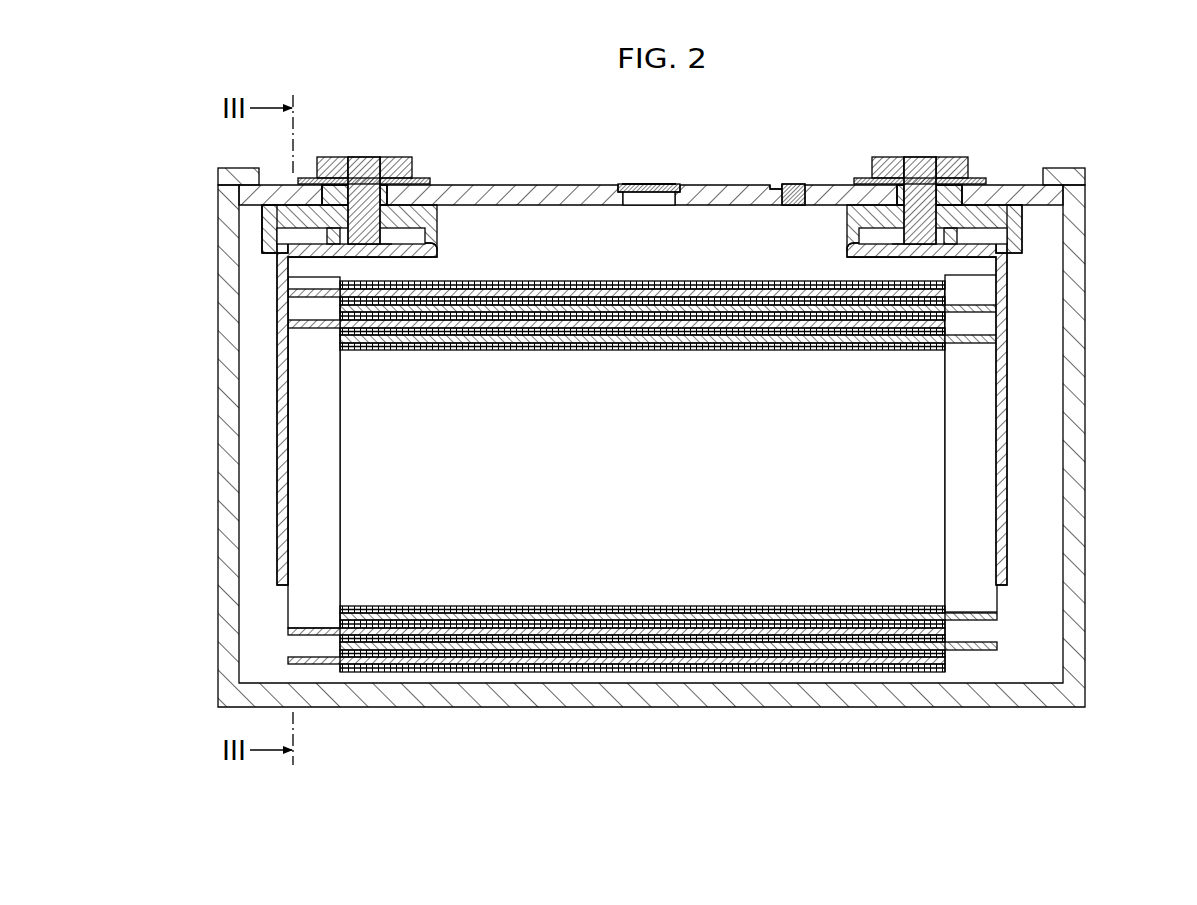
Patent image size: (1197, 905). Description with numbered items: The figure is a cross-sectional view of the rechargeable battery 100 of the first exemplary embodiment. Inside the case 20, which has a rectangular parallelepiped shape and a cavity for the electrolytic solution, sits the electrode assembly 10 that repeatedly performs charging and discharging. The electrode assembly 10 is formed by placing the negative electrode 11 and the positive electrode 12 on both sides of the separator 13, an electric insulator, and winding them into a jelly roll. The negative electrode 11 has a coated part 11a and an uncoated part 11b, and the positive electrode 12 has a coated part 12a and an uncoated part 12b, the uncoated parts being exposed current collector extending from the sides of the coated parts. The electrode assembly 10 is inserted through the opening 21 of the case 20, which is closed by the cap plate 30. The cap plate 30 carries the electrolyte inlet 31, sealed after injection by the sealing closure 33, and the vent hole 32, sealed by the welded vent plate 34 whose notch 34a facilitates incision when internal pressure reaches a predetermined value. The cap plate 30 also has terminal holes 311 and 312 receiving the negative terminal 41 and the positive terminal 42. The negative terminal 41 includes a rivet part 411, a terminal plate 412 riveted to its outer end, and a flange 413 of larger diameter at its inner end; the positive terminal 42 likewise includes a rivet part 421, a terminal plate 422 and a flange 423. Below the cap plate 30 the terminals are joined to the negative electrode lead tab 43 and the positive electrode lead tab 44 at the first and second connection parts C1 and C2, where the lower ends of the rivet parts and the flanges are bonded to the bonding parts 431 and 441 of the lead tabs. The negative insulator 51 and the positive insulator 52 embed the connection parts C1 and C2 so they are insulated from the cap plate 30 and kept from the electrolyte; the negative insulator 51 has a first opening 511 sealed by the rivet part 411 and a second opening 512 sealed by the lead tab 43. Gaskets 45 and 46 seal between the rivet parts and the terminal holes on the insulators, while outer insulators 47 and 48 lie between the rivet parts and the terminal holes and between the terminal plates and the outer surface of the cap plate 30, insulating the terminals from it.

The rechargeable battery 100 is at (660, 118).
The electrode assembly 10 is at (642, 529).
The negative electrode 11 is at (616, 530).
The coated part 11a is at (406, 664).
The uncoated part 11b is at (438, 748).
The positive electrode 12 is at (668, 529).
The coated part 12a is at (890, 668).
The uncoated part 12b is at (960, 650).
The separator 13 is at (582, 640).
The case 20 is at (679, 414).
The opening 21 is at (244, 176).
The cap plate 30 is at (651, 159).
The electrolyte inlet 31 is at (776, 186).
The vent hole 32 is at (652, 196).
The sealing closure 33 is at (790, 186).
The vent plate 34 is at (676, 185).
The notch 34a is at (632, 184).
The terminal hole 311 is at (374, 186).
The terminal hole 312 is at (926, 188).
The negative terminal 41 is at (446, 166).
The rivet part 411 is at (361, 157).
The terminal plate 412 is at (400, 157).
The flange 413 is at (405, 192).
The positive terminal 42 is at (951, 164).
The rivet part 421 is at (916, 157).
The terminal plate 422 is at (951, 157).
The flange 423 is at (877, 222).
The negative electrode lead tab 43 is at (334, 403).
The bonding part 431 is at (425, 236).
The positive electrode lead tab 44 is at (955, 403).
The bonding part 441 is at (859, 236).
The gasket 45 is at (315, 178).
The gasket 46 is at (893, 178).
The outer insulator 47 is at (302, 198).
The outer insulator 48 is at (858, 203).
The negative insulator 51 is at (231, 228).
The first opening 511 is at (296, 268).
The second opening 512 is at (294, 263).
The positive insulator 52 is at (1014, 240).
The first connection part C1 is at (392, 246).
The second connection part C2 is at (892, 246).